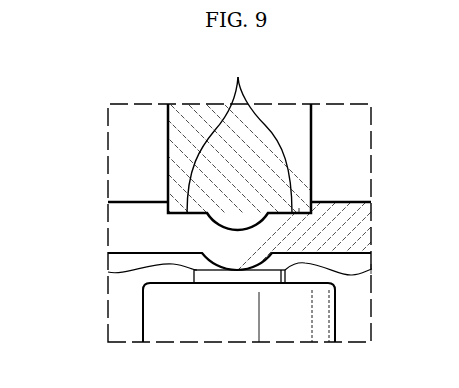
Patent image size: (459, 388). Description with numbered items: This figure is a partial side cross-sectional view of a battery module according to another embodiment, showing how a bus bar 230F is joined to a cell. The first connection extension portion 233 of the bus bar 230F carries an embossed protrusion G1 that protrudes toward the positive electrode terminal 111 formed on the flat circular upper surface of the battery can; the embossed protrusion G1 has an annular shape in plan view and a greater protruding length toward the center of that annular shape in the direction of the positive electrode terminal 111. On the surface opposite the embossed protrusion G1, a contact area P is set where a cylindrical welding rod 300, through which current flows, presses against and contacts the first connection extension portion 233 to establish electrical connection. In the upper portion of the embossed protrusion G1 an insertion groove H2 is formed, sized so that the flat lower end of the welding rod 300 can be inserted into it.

The contact area P is at (238, 78).
The welding rod 300 is at (169, 121).
The bus bar 230F is at (130, 195).
The insertion groove H2 is at (299, 213).
The first connection extension portion 233 is at (350, 202).
The positive electrode terminal 111 is at (110, 273).
The embossed protrusion G1 is at (372, 269).